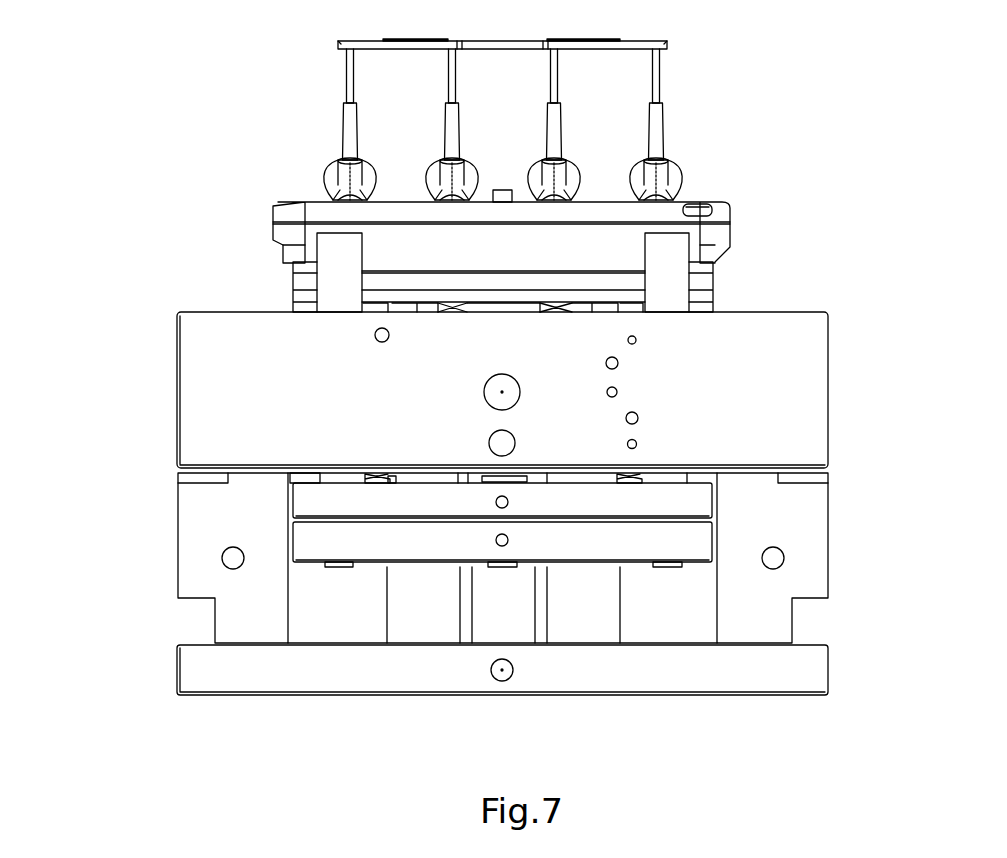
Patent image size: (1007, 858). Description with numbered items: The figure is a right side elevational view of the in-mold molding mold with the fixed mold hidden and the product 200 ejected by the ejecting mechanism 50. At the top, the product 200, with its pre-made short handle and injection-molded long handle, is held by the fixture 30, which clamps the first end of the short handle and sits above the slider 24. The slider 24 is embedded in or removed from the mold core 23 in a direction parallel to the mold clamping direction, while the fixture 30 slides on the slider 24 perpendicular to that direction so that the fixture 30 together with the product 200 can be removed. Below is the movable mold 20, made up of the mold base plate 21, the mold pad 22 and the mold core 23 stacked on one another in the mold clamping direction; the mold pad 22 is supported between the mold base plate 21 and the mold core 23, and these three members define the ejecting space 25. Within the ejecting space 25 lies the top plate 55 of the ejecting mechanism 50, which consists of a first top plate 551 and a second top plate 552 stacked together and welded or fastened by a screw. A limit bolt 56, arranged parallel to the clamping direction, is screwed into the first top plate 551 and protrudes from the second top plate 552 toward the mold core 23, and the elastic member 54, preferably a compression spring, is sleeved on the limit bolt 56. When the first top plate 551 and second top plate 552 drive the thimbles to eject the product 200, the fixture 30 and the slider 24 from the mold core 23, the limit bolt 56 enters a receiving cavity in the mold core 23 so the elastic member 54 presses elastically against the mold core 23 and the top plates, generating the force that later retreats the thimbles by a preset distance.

The product 200 is at (685, 177).
The fixture 30 is at (727, 218).
The slider 24 is at (697, 287).
The movable mold 20 is at (563, 470).
The mold core 23 is at (813, 338).
The mold pad 22 is at (540, 550).
The mold base plate 21 is at (808, 668).
The ejecting space 25 is at (707, 632).
The ejecting mechanism 50 is at (374, 514).
The elastic member 54 is at (372, 476).
The limit bolt 56 is at (392, 478).
The top plate 55 is at (391, 554).
The second top plate 552 is at (308, 495).
The first top plate 551 is at (313, 538).